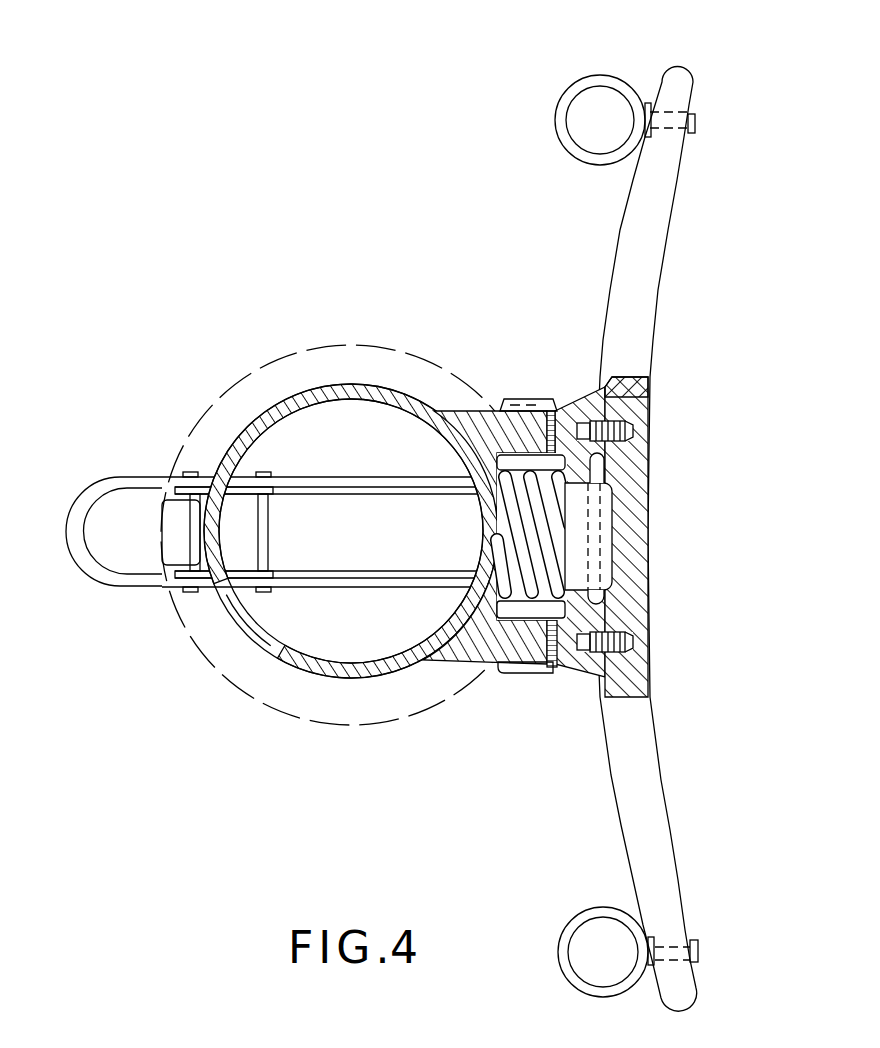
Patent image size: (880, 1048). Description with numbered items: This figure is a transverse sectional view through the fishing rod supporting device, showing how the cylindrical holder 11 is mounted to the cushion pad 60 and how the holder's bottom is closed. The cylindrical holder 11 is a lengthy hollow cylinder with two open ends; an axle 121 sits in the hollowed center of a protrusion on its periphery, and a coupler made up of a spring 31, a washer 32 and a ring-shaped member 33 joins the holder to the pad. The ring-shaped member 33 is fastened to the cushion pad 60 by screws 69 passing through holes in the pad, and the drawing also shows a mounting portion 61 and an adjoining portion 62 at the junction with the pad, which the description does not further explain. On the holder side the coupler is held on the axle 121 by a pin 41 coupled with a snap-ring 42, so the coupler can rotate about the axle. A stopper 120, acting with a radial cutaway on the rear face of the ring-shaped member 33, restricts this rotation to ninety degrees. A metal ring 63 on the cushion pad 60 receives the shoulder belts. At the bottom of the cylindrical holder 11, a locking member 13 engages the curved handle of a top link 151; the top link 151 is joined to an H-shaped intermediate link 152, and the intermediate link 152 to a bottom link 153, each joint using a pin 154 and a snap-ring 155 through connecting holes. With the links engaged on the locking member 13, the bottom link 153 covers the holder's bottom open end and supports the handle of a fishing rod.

The cylindrical holder 11 is at (397, 392).
The locking member 13 is at (172, 520).
The spring 31 is at (557, 668).
The washer 32 is at (540, 677).
The ring-shaped member 33 is at (560, 397).
The pin 41 is at (600, 537).
The snap-ring 42 is at (590, 523).
The cushion pad 60 is at (645, 752).
The mounting block 61 is at (600, 461).
The block top portion 62 is at (650, 380).
The metal ring 63 is at (590, 78).
The screw 69 is at (632, 432).
The stopper 120 is at (522, 400).
The axle 121 is at (578, 552).
The top link 151 is at (115, 580).
The intermediate link 152 is at (202, 643).
The bottom link 153 is at (392, 486).
The pin 154 is at (267, 548).
The snap-ring 155 is at (192, 472).